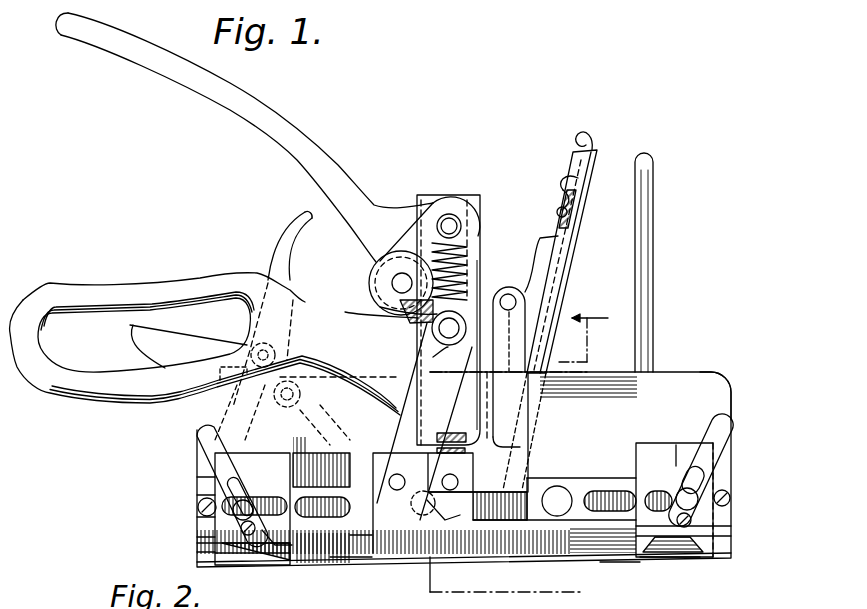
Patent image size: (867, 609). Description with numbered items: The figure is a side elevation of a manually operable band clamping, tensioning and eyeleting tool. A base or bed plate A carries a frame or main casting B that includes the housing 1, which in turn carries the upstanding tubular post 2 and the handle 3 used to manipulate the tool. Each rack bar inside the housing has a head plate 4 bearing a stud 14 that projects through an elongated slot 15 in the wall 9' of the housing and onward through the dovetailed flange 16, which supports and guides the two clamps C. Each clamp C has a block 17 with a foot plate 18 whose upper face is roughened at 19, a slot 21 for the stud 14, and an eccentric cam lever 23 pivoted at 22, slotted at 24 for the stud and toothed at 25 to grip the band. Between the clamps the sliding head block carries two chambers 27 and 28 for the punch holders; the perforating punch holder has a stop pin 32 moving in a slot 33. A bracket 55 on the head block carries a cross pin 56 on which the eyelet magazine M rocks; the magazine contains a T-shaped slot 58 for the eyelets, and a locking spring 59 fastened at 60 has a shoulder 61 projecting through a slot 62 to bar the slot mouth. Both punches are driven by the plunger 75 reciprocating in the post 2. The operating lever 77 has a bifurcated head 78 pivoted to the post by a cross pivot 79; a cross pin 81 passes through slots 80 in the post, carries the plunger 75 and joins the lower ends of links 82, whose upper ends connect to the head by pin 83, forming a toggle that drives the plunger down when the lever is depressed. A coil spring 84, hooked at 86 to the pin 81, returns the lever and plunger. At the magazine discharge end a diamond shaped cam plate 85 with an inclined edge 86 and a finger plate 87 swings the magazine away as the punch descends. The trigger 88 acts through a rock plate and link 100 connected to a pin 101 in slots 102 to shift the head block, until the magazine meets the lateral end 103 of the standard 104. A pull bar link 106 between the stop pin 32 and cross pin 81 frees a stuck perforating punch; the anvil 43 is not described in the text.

The housing 1 is at (654, 383).
The wall of the housing 9' is at (704, 381).
The tubular post 2 is at (480, 253).
The handle 3 is at (205, 344).
The head plate 4 is at (582, 329).
The stud 14 is at (217, 533).
The elongated slot 15 is at (298, 452).
The dovetailed flange 16 is at (598, 520).
The clamp block 17 is at (464, 449).
The foot plate 18 is at (230, 552).
The roughened surface 19 is at (662, 535).
The elongated slot 21 is at (676, 460).
The pivot 22 is at (255, 540).
The eccentric cam lever 23 is at (233, 522).
The elongated slot 24 is at (230, 490).
The toothed toe 25 is at (290, 540).
The chamber 27 is at (372, 560).
The chamber 28 is at (466, 481).
The stop pin 32 is at (350, 470).
The slot 33 is at (322, 509).
The anvil 43 is at (440, 553).
The bracket 55 is at (504, 406).
The cross pin 56 is at (508, 294).
The T-shaped slot 58 is at (577, 203).
The locking spring 59 is at (565, 180).
The fastening 60 is at (558, 210).
The locking shoulder 61 is at (578, 175).
The slot 62 is at (580, 132).
The plunger 75 is at (470, 395).
The operating lever 77 is at (270, 120).
The bifurcated head 78 is at (381, 207).
The cross pivot 79 is at (449, 222).
The elongated slots 80 is at (440, 357).
The cross pin 81 is at (432, 328).
The links 82 is at (430, 320).
The pin 83 is at (398, 283).
The coil spring 84 is at (432, 262).
The diamond shaped plate 85 is at (443, 525).
The inclined edge 86 is at (455, 358).
The finger plate 87 is at (483, 523).
The trigger 88 is at (278, 236).
The link 100 is at (335, 432).
The pin 101 is at (477, 470).
The elongated slots 102 is at (541, 492).
The lateral end 103 is at (652, 160).
The standard 104 is at (651, 252).
The pull bar link 106 is at (392, 414).
The base or bed plate A is at (615, 559).
The frame or main casting B is at (545, 368).
The clamp C is at (227, 542).
The eyelet magazine M is at (535, 295).